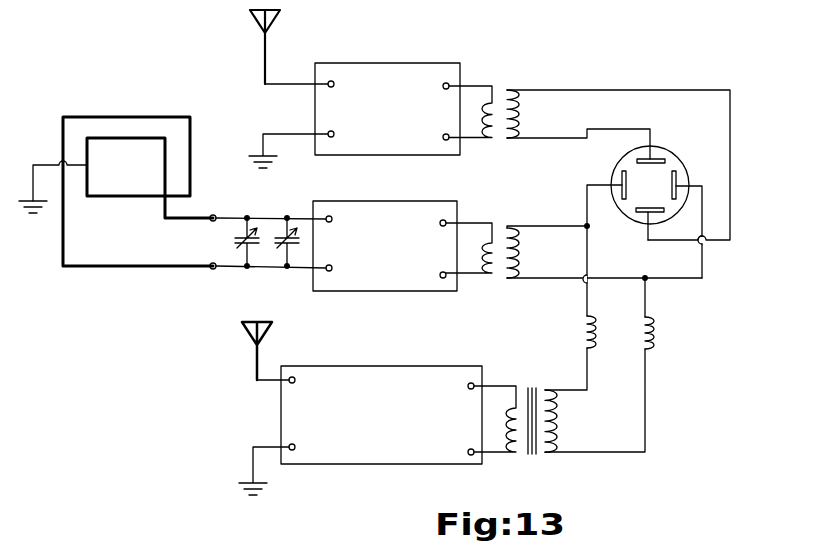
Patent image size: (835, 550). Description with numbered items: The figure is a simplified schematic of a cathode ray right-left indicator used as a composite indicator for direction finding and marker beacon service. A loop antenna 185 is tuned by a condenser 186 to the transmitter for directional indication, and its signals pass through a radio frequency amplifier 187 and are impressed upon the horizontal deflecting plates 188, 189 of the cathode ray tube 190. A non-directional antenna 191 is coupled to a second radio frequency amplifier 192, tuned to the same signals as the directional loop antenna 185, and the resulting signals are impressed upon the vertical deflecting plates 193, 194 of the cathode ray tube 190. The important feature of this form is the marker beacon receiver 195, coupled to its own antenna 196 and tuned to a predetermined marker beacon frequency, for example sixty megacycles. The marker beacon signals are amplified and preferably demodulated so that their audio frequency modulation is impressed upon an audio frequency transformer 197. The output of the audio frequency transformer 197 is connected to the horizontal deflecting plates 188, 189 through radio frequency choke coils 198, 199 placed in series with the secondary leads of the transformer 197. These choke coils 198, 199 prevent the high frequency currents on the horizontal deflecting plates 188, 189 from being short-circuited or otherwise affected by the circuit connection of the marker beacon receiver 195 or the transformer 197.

The loop antenna 185 is at (137, 117).
The condenser 186 is at (240, 243).
The radio frequency amplifier 187 is at (404, 206).
The horizontal deflecting plate 188 is at (618, 177).
The horizontal deflecting plate 189 is at (680, 177).
The cathode ray tube 190 is at (689, 161).
The non-directional antenna 191 is at (280, 23).
The F.F. amplifier 192 is at (403, 68).
The vertical deflecting plate 193 is at (661, 157).
The vertical deflecting plate 194 is at (638, 213).
The marker beacon receiver 195 is at (350, 366).
The antenna 196 is at (246, 334).
The audio frequency transformer 197 is at (537, 456).
The radio frequency choke coil 198 is at (579, 328).
The radio frequency choke coil 199 is at (655, 328).